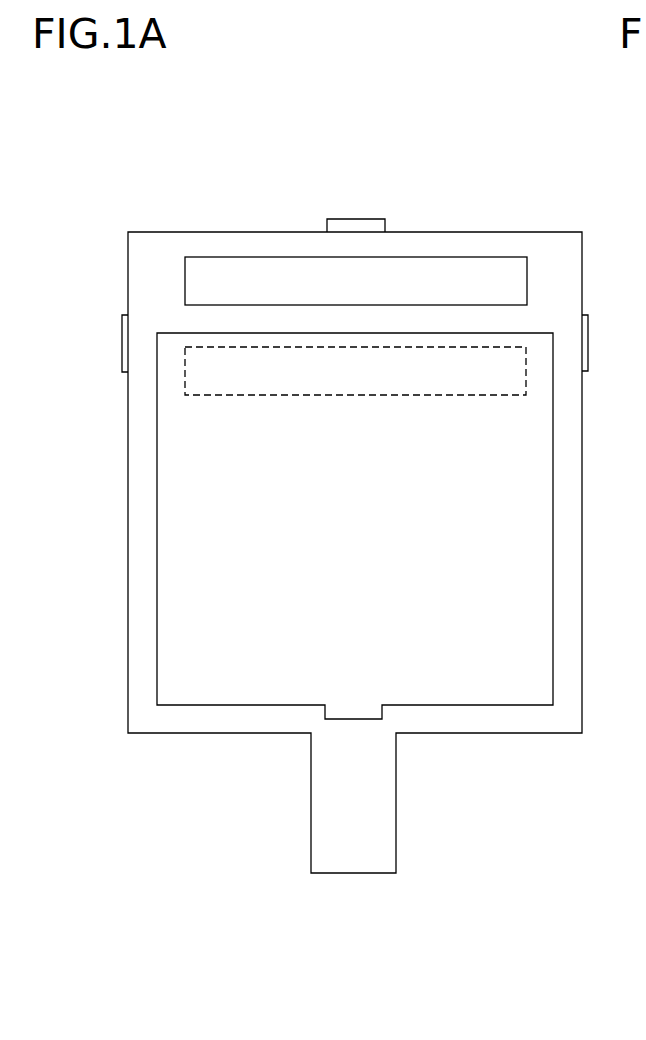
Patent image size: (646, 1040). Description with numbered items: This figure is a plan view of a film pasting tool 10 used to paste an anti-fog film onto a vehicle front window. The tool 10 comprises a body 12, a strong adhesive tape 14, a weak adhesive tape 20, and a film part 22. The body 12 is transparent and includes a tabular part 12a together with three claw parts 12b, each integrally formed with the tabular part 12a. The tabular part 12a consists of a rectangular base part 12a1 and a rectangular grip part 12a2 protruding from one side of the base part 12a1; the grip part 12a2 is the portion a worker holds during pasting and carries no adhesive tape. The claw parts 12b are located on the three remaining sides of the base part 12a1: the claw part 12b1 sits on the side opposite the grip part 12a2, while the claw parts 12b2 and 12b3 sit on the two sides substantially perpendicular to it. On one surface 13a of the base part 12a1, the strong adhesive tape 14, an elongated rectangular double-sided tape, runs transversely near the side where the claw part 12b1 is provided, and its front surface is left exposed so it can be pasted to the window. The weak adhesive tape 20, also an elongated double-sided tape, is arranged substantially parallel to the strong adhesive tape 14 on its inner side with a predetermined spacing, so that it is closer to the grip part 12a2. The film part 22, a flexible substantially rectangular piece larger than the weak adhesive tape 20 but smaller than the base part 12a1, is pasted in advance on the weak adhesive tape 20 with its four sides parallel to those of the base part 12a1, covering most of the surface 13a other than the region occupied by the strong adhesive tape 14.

The film pasting tool 10 is at (210, 162).
The body 12 is at (128, 467).
The tabular part 12a is at (238, 820).
The base part 12a1 is at (135, 670).
The grip part 12a2 is at (325, 813).
The claw parts 12b is at (462, 148).
The claw part 12b1 is at (357, 219).
The claw part 12b2 is at (122, 337).
The claw part 12b3 is at (588, 337).
The one surface 13a is at (135, 612).
The strong adhesive tape 14 is at (483, 281).
The weak adhesive tape 20 is at (468, 372).
The film part 22 is at (530, 524).